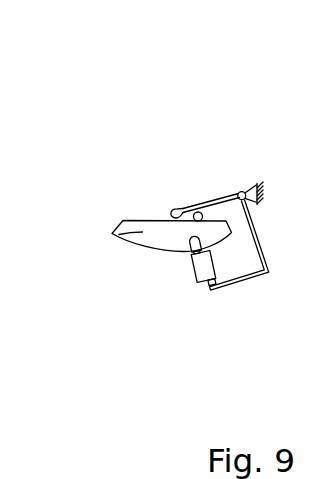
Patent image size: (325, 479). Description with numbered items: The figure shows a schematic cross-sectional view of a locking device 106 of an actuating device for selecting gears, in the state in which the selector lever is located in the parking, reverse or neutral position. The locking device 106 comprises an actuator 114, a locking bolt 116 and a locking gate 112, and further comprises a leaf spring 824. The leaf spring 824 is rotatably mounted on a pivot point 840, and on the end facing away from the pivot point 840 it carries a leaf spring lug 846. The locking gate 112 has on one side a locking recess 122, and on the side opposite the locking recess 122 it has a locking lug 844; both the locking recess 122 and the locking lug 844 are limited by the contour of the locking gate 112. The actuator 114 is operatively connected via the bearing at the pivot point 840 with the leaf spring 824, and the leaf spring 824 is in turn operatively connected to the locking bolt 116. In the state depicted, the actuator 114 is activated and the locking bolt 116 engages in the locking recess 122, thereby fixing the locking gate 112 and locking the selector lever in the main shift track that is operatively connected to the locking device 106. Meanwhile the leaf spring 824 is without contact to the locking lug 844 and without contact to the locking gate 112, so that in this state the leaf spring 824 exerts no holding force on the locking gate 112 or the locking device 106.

The locking device 106 is at (120, 205).
The locking gate 112 is at (116, 240).
The actuator 114 is at (202, 262).
The locking bolt 116 is at (193, 252).
The locking recess 122 is at (189, 245).
The leaf spring 824 is at (210, 199).
The pivot point 840 is at (242, 192).
The locking lug 844 is at (194, 207).
The leaf spring lug 846 is at (171, 211).